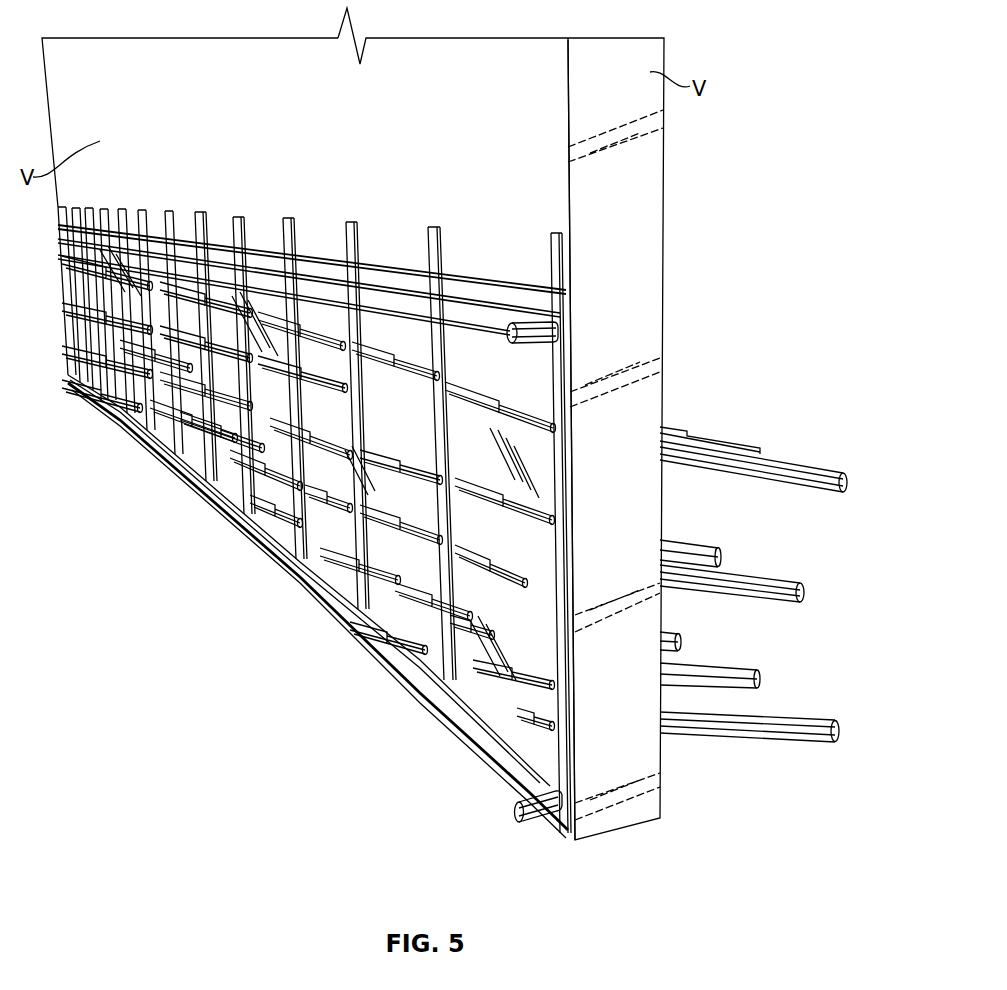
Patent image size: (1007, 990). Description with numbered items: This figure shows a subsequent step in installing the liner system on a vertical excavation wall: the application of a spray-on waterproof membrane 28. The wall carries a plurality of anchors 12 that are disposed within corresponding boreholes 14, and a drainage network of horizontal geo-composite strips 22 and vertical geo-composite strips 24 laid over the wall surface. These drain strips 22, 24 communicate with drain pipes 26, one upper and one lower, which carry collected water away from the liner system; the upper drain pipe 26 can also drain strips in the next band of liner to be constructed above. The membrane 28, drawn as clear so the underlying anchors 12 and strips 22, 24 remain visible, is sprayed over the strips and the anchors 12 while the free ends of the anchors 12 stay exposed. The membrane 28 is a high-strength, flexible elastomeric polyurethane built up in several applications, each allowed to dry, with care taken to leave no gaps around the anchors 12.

The anchors 12 is at (782, 430).
The boreholes 14 is at (823, 476).
The horizontal geo-composite strips 22 is at (190, 240).
The vertical geo-composite strips 24 is at (238, 216).
The drain pipes 26 is at (545, 323).
The membrane 28 is at (572, 344).